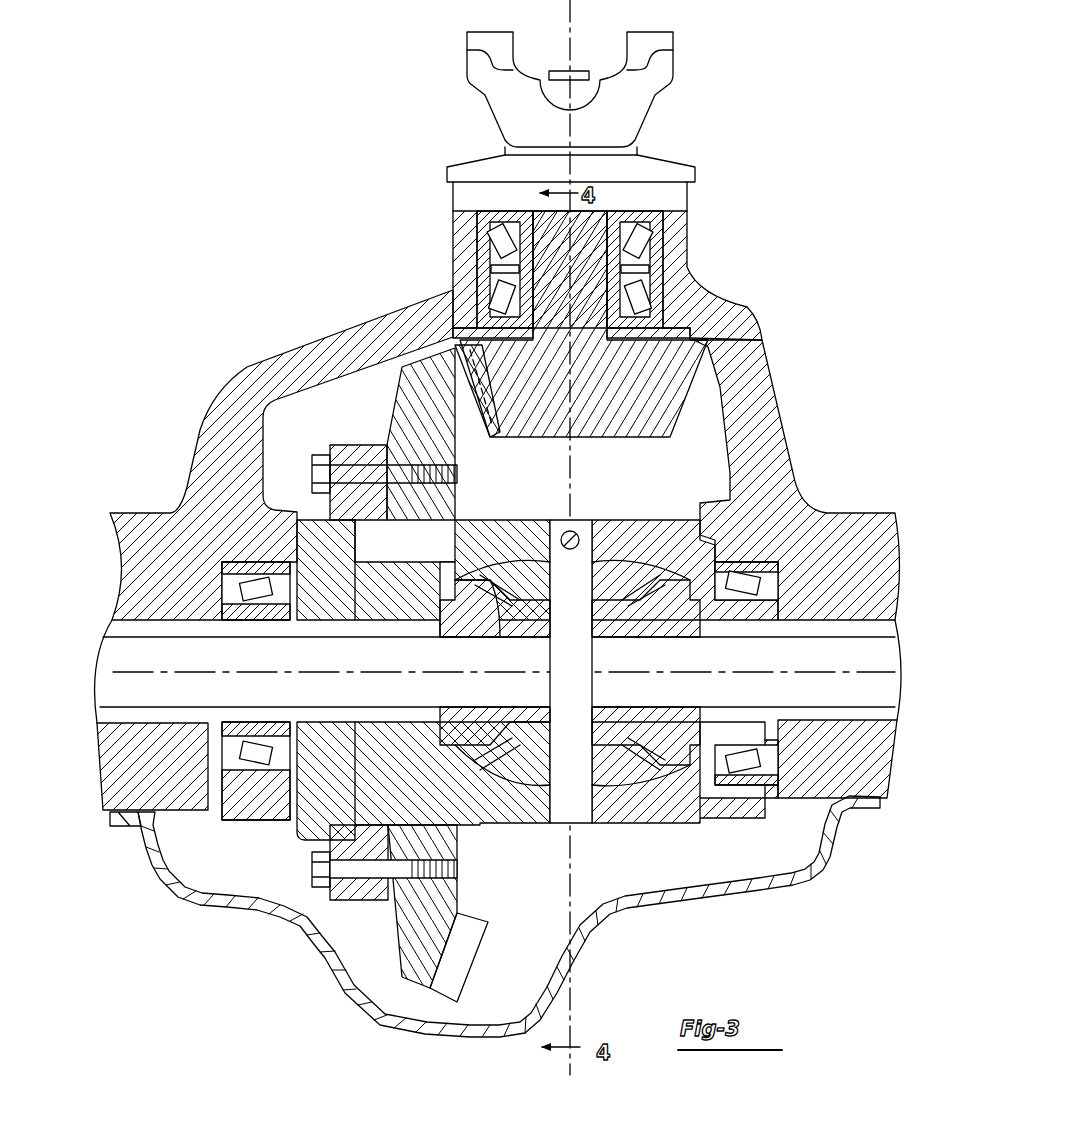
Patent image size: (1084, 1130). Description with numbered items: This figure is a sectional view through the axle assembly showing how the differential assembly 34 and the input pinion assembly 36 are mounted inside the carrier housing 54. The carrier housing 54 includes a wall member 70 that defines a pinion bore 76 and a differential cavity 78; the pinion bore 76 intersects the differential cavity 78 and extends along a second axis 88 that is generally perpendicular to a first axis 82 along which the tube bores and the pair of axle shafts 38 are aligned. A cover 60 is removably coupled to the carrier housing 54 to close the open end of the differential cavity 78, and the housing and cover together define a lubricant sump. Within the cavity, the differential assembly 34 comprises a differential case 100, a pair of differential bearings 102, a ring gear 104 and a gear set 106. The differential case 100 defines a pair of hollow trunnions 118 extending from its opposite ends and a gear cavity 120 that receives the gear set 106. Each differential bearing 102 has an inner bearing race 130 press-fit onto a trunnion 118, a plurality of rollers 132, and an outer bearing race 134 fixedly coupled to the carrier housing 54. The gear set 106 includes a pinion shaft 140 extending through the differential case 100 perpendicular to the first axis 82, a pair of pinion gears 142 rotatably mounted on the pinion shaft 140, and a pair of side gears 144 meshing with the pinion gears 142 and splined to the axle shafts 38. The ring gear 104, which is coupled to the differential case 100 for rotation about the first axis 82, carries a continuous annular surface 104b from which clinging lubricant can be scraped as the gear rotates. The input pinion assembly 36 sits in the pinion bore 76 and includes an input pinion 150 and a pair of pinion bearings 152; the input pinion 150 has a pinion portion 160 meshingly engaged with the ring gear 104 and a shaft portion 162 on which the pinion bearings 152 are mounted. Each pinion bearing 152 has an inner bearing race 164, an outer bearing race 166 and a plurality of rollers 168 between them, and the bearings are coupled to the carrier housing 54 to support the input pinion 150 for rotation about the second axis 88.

The differential assembly 34 is at (497, 518).
The input pinion assembly 36 is at (655, 372).
The axle shafts 38 is at (103, 682).
The carrier housing 54 is at (756, 388).
The cover 60 is at (330, 990).
The wall member 70 is at (775, 438).
The pinion bore 76 is at (652, 222).
The differential cavity 78 is at (680, 496).
The first axis 82 is at (338, 672).
The second axis 88 is at (576, 33).
The differential case 100 is at (377, 442).
The differential bearings 102 is at (222, 560).
The ring gear 104 is at (413, 372).
The continuous annular surface 104b is at (428, 982).
The gear set 106 is at (484, 704).
The trunnions 118 is at (268, 616).
The gear cavity 120 is at (600, 632).
The inner bearing race 130 is at (768, 600).
The rollers 132 is at (762, 588).
The outer bearing race 134 is at (770, 572).
The pinion shaft 140 is at (585, 683).
The pinion gears 142 is at (535, 790).
The side gears 144 is at (457, 637).
The input pinion 150 is at (607, 395).
The pinion bearings 152 is at (478, 243).
The pinion portion 160 is at (513, 420).
The shaft portion 162 is at (560, 225).
The inner bearing race 164 is at (622, 227).
The outer bearing race 166 is at (660, 262).
The rollers 168 is at (640, 308).